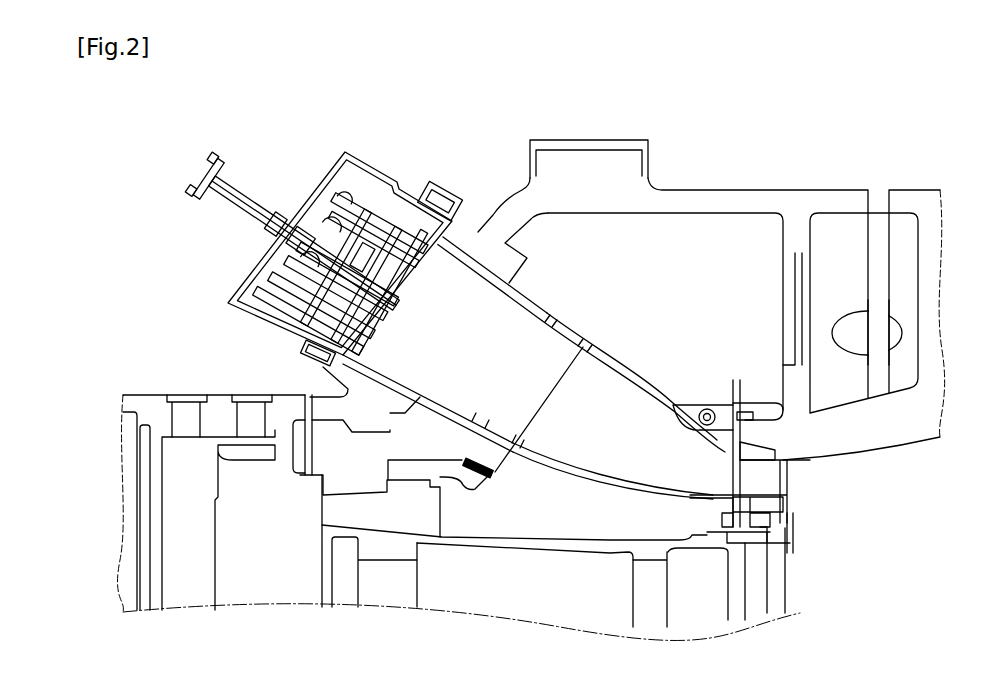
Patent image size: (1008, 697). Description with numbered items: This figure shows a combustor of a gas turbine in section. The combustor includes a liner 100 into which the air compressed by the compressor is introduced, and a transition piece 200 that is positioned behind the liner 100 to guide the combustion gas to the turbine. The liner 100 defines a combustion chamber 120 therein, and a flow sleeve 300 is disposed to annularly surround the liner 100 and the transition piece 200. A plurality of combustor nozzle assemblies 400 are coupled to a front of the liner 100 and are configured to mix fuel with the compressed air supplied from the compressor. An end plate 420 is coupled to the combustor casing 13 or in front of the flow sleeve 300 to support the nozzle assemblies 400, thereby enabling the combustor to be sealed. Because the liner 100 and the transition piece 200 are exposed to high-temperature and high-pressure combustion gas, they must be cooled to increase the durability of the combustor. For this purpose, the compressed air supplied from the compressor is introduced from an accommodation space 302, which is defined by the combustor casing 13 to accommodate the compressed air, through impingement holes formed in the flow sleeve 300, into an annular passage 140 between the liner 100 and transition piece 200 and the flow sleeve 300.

The combustor casing 13 is at (725, 200).
The liner 100 is at (488, 278).
The combustion chamber 120 is at (507, 357).
The annular passage 140 is at (440, 397).
The transition piece 200 is at (600, 484).
The flow sleeve 300 is at (540, 302).
The accommodation space 302 is at (697, 305).
The combustor nozzle assemblies 400 is at (262, 262).
The end plate 420 is at (332, 190).